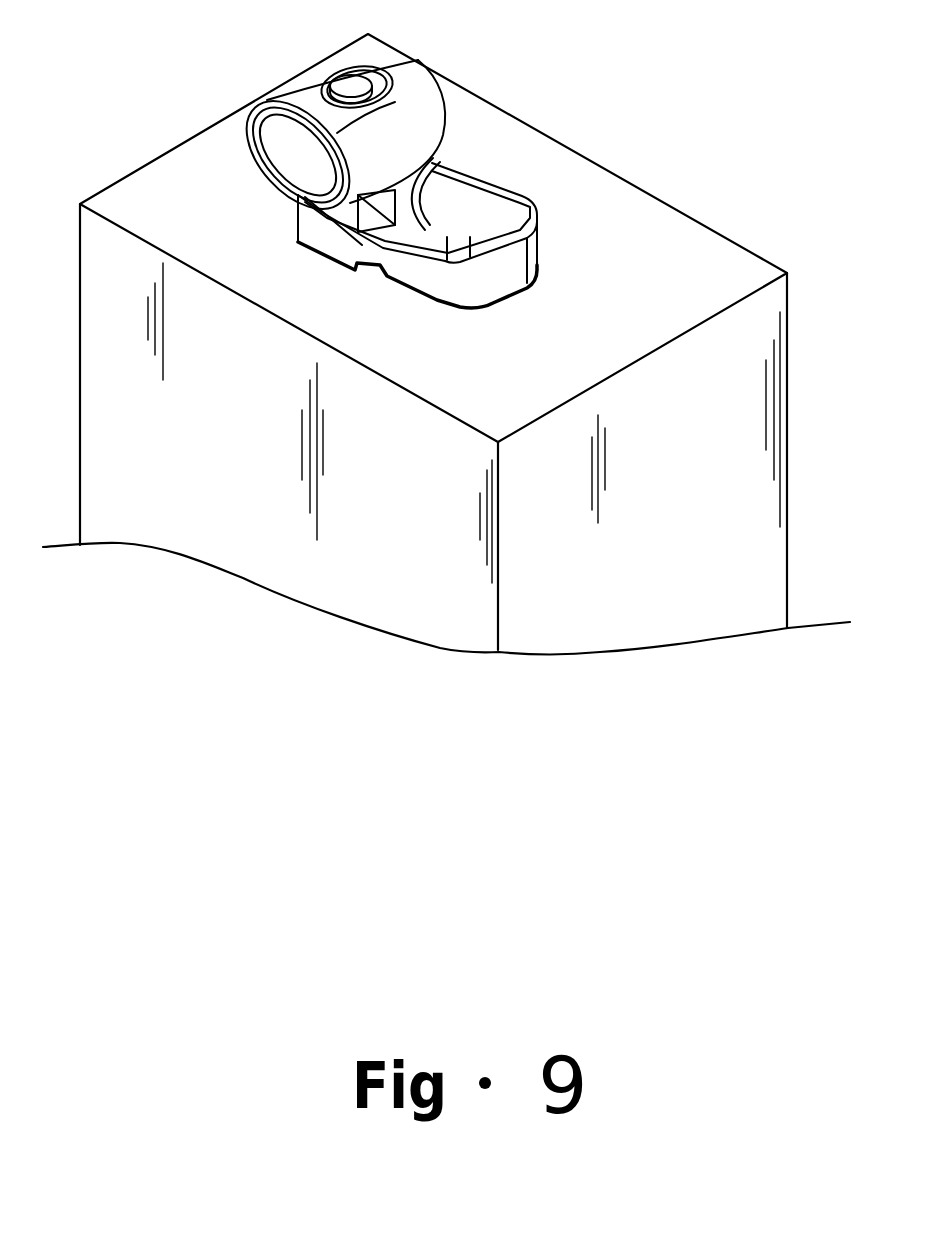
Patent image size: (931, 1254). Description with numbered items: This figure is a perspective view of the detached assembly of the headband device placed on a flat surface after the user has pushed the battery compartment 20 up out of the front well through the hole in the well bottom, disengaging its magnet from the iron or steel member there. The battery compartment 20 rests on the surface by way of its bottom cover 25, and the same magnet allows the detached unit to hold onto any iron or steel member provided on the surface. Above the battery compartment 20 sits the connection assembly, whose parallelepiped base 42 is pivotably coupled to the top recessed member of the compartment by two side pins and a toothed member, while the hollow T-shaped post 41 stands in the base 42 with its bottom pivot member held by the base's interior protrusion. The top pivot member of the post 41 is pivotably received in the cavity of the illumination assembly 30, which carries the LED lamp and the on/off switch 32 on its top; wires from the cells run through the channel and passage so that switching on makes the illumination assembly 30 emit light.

The battery compartment 20 is at (483, 196).
The bottom cover 25 is at (487, 298).
The illumination assembly 30 is at (420, 70).
The on/off switch 32 is at (348, 73).
The hollow T-shaped post 41 is at (422, 165).
The base 42 is at (367, 217).